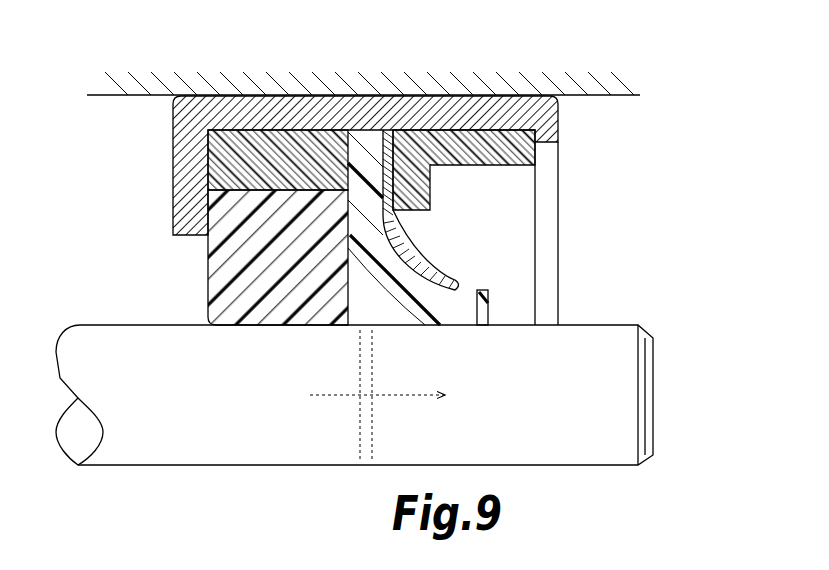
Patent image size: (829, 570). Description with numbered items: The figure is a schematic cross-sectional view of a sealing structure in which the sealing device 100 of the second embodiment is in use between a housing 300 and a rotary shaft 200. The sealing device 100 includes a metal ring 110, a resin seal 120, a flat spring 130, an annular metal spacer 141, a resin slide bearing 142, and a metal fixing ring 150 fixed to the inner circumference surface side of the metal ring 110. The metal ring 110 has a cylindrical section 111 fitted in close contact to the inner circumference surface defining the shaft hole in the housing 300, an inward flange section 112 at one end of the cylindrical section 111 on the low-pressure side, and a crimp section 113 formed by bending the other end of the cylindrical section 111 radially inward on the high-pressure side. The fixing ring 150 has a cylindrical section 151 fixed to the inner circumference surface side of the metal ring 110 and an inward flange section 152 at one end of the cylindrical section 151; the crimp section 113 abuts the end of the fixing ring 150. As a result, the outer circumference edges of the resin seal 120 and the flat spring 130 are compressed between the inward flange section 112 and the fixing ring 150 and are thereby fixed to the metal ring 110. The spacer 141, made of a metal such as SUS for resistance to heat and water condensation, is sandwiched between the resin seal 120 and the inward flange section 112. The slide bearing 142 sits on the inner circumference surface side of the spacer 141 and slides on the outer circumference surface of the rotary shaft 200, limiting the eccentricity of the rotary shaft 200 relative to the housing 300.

The sealing device 100 is at (138, 207).
The metal ring 110 is at (419, 127).
The cylindrical section 111 is at (458, 107).
The inward flange section 112 is at (173, 148).
The crimp section 113 is at (558, 133).
The resin seal 120 is at (472, 315).
The flat spring 130 is at (405, 253).
The spacer 141 is at (242, 130).
The slide bearing 142 is at (208, 257).
The fixing ring 150 is at (560, 227).
The cylindrical section 151 is at (535, 152).
The inward flange section 152 is at (432, 202).
The rotary shaft 200 is at (354, 395).
The housing 300 is at (363, 73).